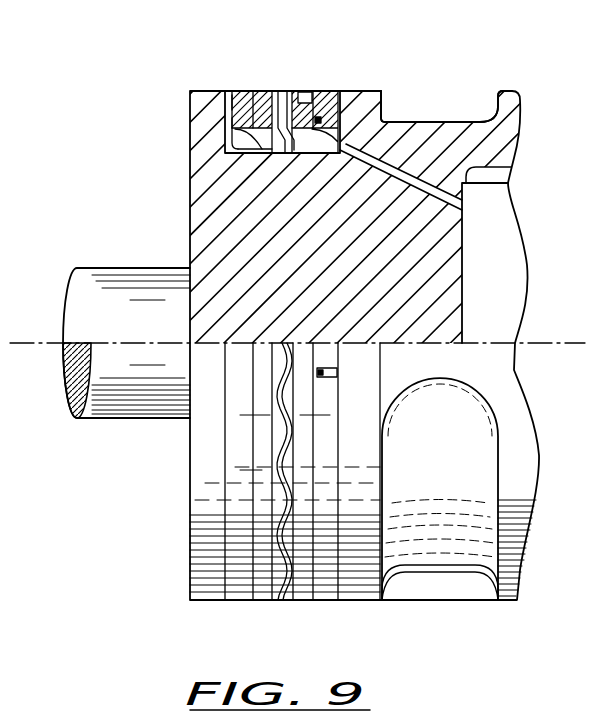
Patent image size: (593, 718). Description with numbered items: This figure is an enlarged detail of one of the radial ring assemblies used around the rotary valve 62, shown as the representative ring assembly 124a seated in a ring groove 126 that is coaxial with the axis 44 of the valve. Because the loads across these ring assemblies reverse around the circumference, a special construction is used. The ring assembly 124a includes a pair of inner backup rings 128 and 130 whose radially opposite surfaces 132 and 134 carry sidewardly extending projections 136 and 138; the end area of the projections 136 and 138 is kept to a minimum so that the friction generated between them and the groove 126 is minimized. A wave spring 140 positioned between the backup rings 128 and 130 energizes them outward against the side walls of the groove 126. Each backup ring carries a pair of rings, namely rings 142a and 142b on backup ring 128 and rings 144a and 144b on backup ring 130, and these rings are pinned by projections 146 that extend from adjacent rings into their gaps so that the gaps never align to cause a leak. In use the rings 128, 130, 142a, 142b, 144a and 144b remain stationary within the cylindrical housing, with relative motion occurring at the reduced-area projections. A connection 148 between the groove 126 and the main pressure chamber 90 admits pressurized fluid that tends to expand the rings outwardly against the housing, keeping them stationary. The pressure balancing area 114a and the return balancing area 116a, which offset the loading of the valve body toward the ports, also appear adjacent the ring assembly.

The axis 44 is at (50, 342).
The valve 62 is at (386, 96).
The main pressure chamber 90 is at (508, 277).
The pressure balancing area 114a is at (470, 477).
The return balancing area 116a is at (476, 114).
The radial ring assembly 124a is at (312, 85).
The ring groove 126 is at (226, 117).
The inner backup ring 128 is at (236, 150).
The inner backup ring 130 is at (350, 131).
The radially opposite surface 132 is at (235, 123).
The radially opposite surface 134 is at (384, 113).
The sidewardly extending projection 136 is at (229, 106).
The sidewardly extending projection 138 is at (383, 91).
The wave spring 140 is at (284, 92).
The ring 142a is at (245, 92).
The ring 142b is at (264, 92).
The ring 144a is at (343, 100).
The ring 144b is at (334, 91).
The projection 146 is at (320, 90).
The connection 148 is at (490, 183).